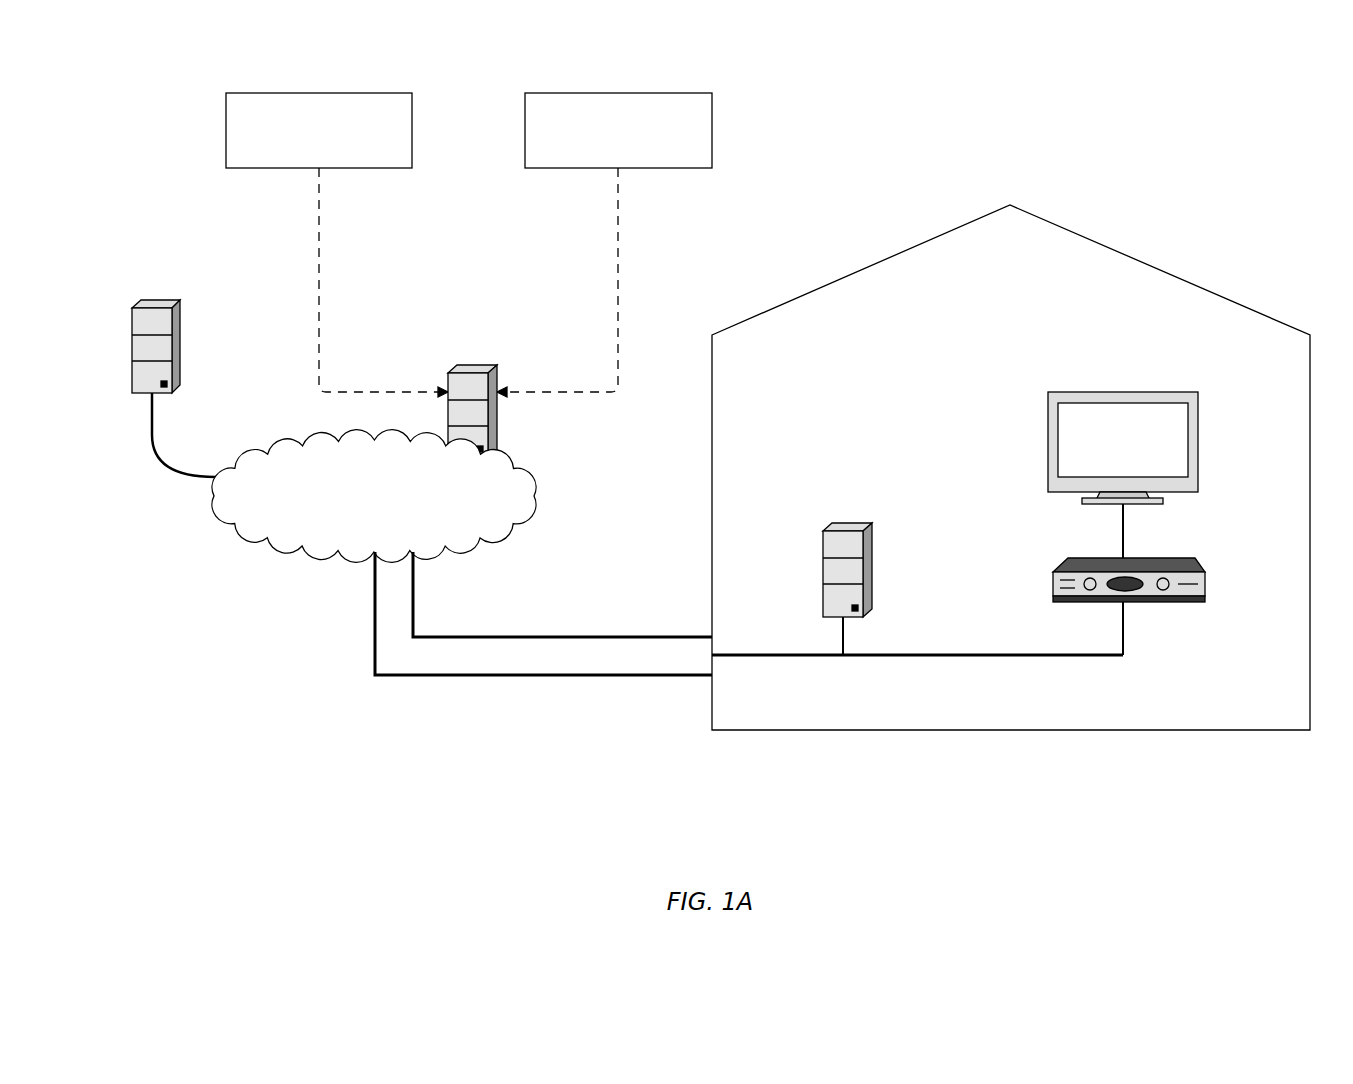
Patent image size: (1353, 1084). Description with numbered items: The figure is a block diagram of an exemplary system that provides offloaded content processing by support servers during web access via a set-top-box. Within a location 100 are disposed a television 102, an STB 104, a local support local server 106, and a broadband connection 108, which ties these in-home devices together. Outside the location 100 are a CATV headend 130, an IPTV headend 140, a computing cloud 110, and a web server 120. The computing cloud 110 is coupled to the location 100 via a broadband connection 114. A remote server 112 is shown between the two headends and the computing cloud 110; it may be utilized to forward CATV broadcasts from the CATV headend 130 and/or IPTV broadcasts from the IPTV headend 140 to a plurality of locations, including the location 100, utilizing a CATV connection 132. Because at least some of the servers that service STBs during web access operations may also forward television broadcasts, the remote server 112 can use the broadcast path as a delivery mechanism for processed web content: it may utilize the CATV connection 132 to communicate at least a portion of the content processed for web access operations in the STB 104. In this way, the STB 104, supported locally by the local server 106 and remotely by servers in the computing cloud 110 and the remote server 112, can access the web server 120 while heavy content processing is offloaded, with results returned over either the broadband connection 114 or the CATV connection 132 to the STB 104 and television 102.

The location 100 is at (1011, 467).
The television 102 is at (1049, 430).
The set-top-box 104 is at (1052, 578).
The local server 106 is at (823, 578).
The broadband connection 108 is at (937, 657).
The computing cloud 110 is at (374, 496).
The remote server 112 is at (497, 414).
The broadband connection 114 is at (487, 679).
The web server 120 is at (133, 357).
The CATV headend 130 is at (604, 245).
The CATV connection 132 is at (560, 635).
The IPTV headend 140 is at (337, 245).